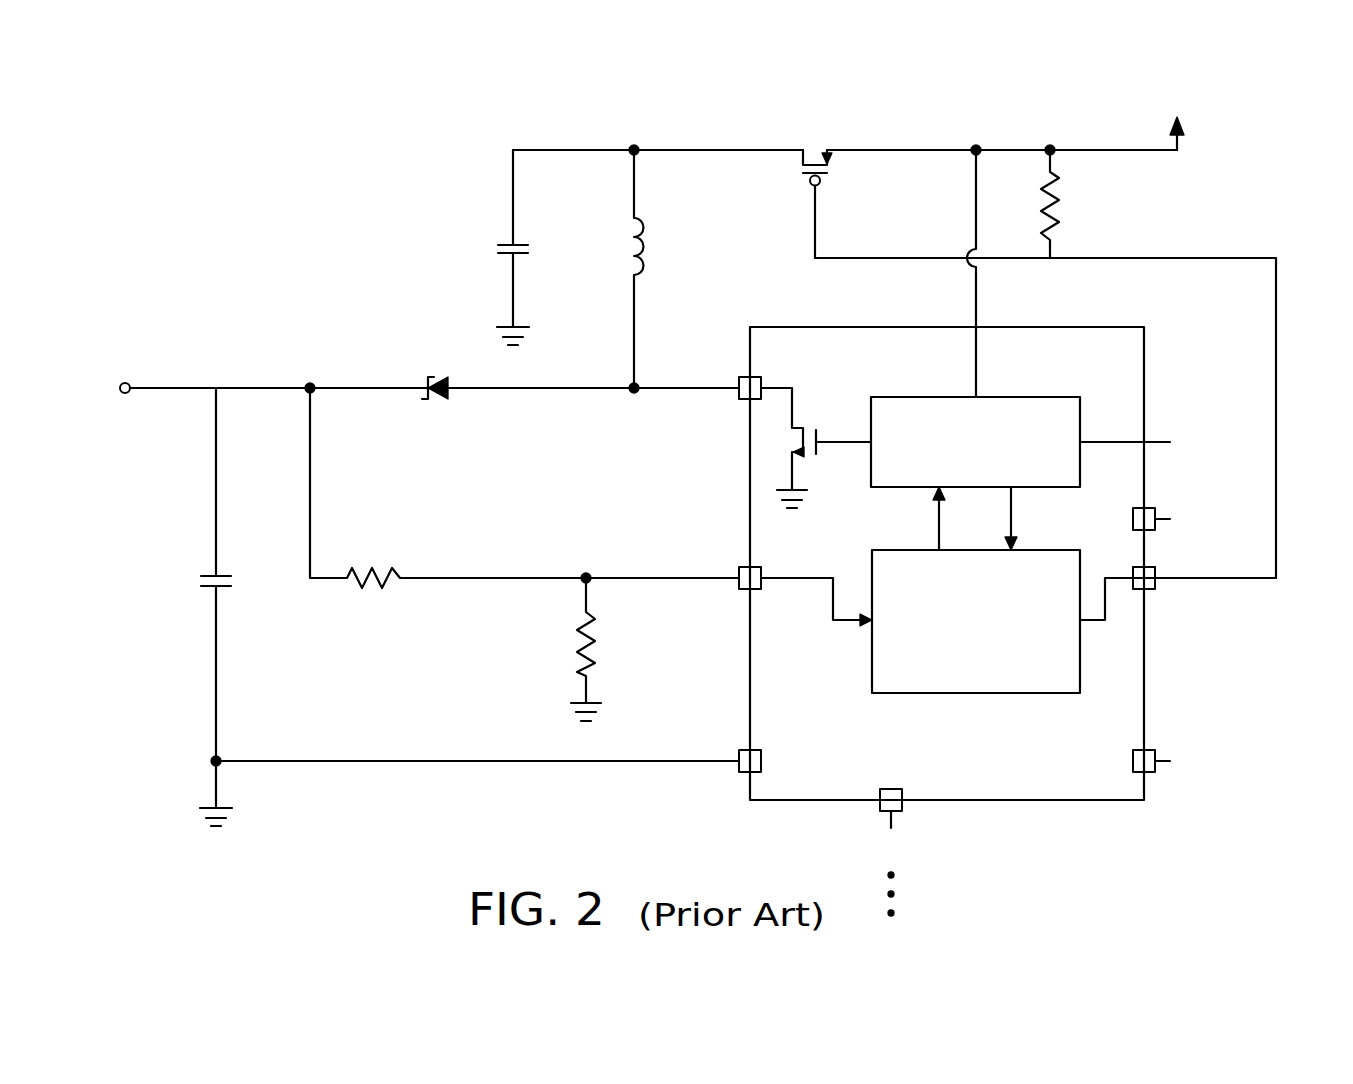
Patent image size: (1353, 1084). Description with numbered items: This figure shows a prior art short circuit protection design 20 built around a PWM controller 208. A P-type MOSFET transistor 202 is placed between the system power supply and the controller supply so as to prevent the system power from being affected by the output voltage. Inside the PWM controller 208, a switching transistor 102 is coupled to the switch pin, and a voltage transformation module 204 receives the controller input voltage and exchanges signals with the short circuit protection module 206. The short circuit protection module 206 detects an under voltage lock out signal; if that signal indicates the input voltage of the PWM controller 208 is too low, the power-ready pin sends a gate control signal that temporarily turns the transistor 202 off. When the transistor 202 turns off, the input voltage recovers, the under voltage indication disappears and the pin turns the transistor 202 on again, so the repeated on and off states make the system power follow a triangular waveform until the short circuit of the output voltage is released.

The power converter circuit (prior art) 20 is at (720, 502).
The transistor 102 is at (796, 425).
The P-type MOSFET transistor 202 is at (803, 150).
The voltage transformation module 204 is at (1047, 395).
The short circuit protection module 206 is at (965, 697).
The PWM controller 208 is at (984, 621).